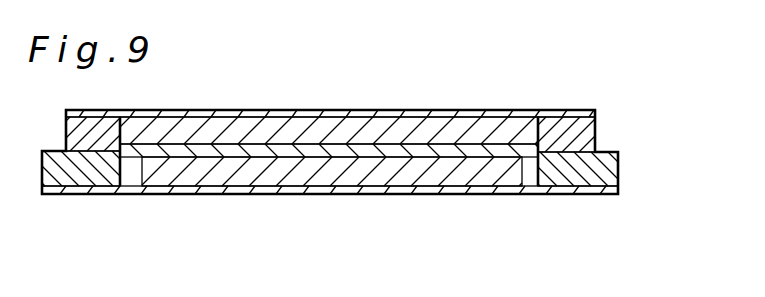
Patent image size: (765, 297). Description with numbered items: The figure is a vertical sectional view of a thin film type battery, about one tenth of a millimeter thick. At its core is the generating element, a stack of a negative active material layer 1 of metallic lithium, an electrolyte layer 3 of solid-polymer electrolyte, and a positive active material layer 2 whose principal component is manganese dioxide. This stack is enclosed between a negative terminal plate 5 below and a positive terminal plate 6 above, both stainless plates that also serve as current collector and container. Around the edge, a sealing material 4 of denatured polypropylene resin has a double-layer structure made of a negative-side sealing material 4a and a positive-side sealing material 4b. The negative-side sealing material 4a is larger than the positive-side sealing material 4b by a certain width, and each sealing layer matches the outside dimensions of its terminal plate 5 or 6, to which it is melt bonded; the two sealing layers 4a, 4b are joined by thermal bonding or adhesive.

The negative active material layer 1 is at (338, 172).
The positive active material layer 2 is at (361, 132).
The electrolyte layer 3 is at (418, 152).
The sealing material 4 is at (395, 146).
The negative-side sealing material 4a is at (368, 175).
The positive-side sealing material 4b is at (593, 136).
The negative terminal plate 5 is at (215, 190).
The positive terminal plate 6 is at (221, 117).